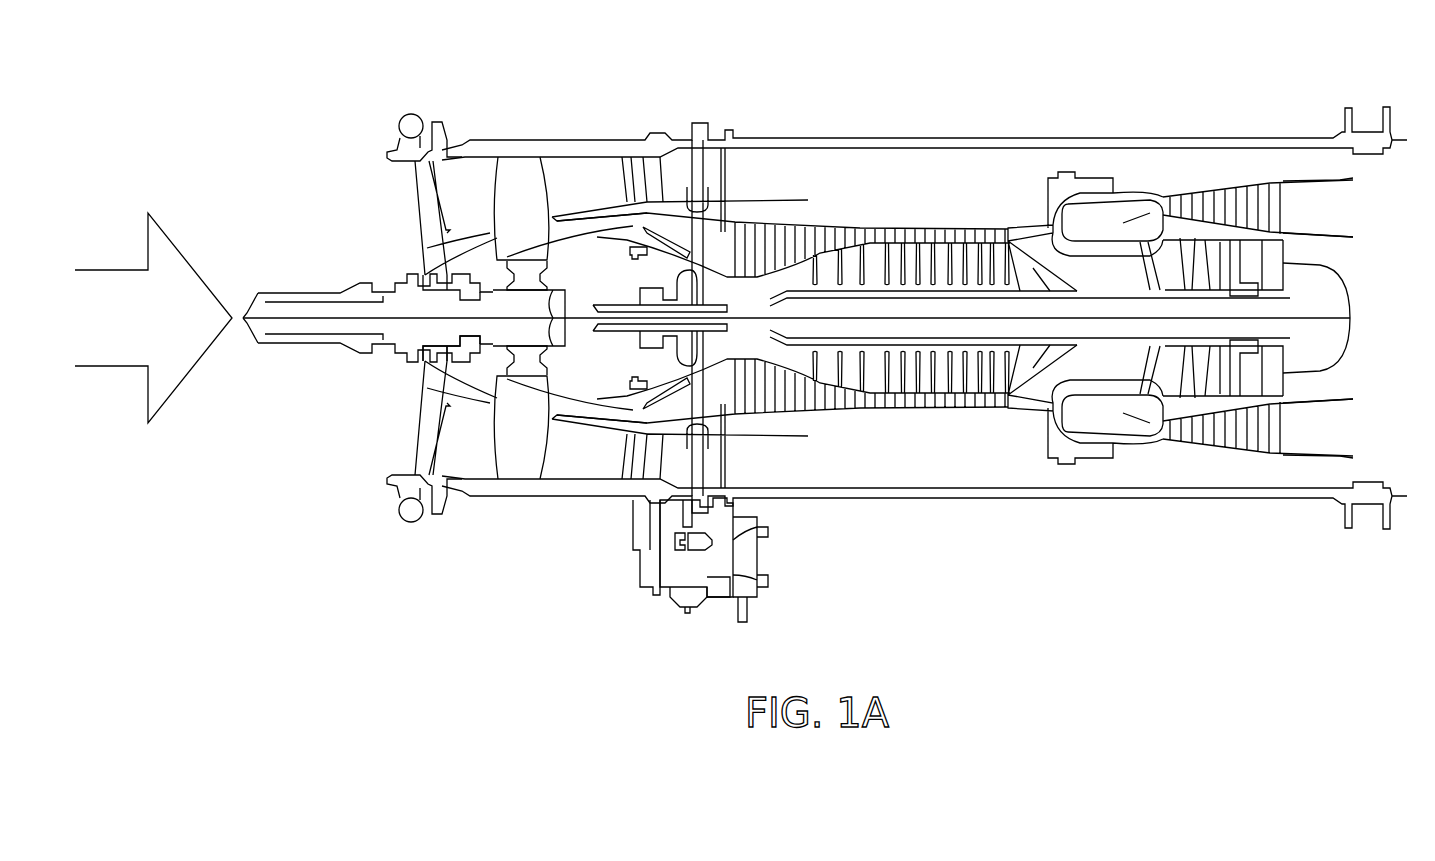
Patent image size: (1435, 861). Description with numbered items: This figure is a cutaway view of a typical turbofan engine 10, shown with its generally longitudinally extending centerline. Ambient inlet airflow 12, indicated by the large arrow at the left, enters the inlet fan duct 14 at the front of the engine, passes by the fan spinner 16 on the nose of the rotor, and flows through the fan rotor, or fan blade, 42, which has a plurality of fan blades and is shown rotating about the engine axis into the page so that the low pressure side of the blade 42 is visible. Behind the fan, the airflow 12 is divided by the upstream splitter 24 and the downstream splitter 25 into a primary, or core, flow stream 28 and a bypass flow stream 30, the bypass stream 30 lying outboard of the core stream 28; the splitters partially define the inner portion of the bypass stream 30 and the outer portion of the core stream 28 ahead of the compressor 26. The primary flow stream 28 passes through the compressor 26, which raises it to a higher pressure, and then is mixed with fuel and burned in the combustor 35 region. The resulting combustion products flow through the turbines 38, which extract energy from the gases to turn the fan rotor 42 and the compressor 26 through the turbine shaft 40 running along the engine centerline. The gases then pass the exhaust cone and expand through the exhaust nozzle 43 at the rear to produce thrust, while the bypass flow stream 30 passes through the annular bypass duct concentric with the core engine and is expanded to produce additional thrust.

The turbofan engine 10 is at (877, 98).
The ambient inlet airflow 12 is at (117, 321).
The inlet fan duct 14 is at (500, 532).
The fan spinner 16 is at (427, 368).
The upstream splitter 24 is at (433, 228).
The downstream splitter 25 is at (565, 212).
The compressor 26 is at (855, 393).
The primary (core) flow stream 28 is at (590, 226).
The bypass flow stream 30 is at (602, 178).
The combustor 35 is at (1158, 208).
The turbines 38 is at (1258, 215).
The turbine shaft 40 is at (277, 329).
The fan rotor (fan blade) 42 is at (533, 215).
The exhaust nozzle 43 is at (1353, 180).